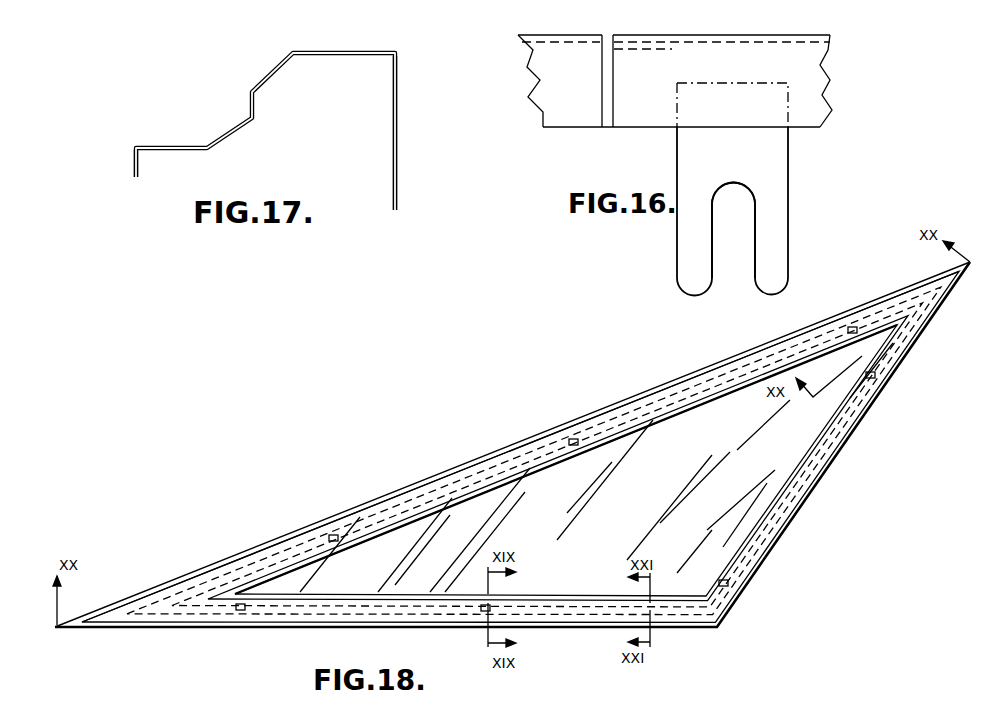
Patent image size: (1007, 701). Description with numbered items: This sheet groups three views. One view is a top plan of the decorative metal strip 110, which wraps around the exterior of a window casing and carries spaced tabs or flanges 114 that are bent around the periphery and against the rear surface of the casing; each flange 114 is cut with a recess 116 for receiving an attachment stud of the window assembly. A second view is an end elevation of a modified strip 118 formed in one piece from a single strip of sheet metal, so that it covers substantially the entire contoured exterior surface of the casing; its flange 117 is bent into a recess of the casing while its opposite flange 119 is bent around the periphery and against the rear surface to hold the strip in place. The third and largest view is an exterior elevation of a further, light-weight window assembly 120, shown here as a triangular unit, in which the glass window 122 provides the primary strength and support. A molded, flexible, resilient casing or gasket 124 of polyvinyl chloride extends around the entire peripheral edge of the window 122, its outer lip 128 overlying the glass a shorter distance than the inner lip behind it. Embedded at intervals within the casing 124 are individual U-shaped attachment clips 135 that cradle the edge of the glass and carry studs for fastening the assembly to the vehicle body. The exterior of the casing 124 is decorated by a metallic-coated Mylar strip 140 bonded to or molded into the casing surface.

In FIG. 16, the decorative metal strip 110 is at (724, 52).
In FIG. 16, the spaced tabs or flanges 114 is at (773, 162).
In FIG. 16, the recesses 116 is at (753, 218).
In FIG. 17, the flange 117 is at (132, 165).
In FIG. 17, the one-piece decorative metal strip 118 is at (347, 55).
In FIG. 17, the flange 119 is at (398, 128).
In FIG. 18, the window assembly 120 is at (438, 461).
In FIG. 18, the glass window 122 is at (682, 481).
In FIG. 18, the casing or gasket 124 is at (376, 526).
In FIG. 18, the outer lip 128 is at (471, 498).
In FIG. 18, the attachment clips 135 is at (334, 533).
In FIG. 18, the metallic-coated Mylar strip 140 is at (692, 381).